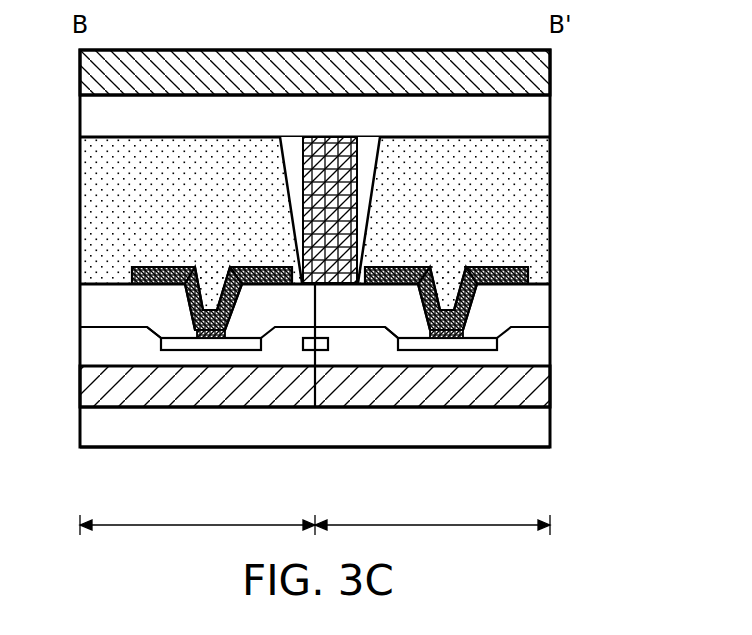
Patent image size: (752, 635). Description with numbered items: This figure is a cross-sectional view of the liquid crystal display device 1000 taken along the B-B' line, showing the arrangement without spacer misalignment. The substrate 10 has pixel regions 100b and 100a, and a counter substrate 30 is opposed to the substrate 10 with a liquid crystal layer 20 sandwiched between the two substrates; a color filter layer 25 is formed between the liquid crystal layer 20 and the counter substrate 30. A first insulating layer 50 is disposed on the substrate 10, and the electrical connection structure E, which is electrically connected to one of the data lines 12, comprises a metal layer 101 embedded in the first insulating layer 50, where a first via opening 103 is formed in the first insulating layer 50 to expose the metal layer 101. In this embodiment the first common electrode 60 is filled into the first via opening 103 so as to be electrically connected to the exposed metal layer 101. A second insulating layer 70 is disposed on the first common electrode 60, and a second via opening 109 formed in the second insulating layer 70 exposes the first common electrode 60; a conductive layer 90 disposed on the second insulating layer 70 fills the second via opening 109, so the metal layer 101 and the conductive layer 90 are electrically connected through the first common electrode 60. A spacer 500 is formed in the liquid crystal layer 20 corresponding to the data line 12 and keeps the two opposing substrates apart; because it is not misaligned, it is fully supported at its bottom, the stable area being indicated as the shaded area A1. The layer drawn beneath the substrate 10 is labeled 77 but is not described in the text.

The liquid crystal display device 1000 is at (590, 48).
The counter substrate 30 is at (540, 72).
The color filter layer 25 is at (540, 115).
The liquid crystal layer 20 is at (540, 152).
The electrical connection structure E is at (449, 278).
The stable area A1 is at (343, 191).
The spacer 500 is at (375, 152).
The conductive layer 90 is at (185, 267).
The first common electrode 60 is at (188, 318).
The second insulating layer 70 is at (88, 296).
The first insulating layer 50 is at (88, 343).
The metal layer 101 is at (205, 346).
The first via opening 103 is at (223, 338).
The second via opening 109 is at (180, 322).
The data line 12 is at (320, 348).
The substrate 10 is at (540, 387).
The protective film 77 is at (540, 427).
The pixel region 100b is at (197, 538).
The pixel region 100a is at (432, 538).